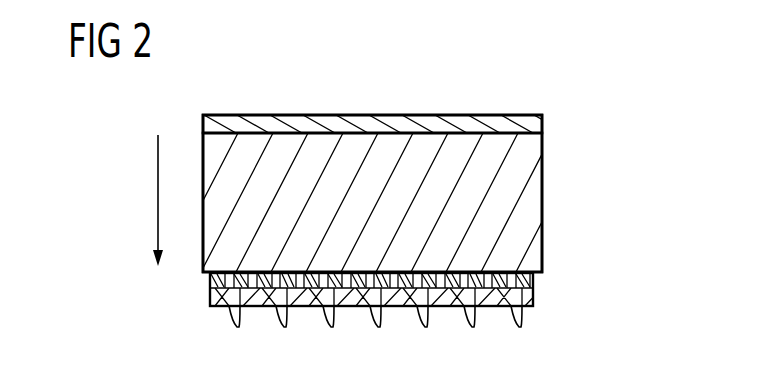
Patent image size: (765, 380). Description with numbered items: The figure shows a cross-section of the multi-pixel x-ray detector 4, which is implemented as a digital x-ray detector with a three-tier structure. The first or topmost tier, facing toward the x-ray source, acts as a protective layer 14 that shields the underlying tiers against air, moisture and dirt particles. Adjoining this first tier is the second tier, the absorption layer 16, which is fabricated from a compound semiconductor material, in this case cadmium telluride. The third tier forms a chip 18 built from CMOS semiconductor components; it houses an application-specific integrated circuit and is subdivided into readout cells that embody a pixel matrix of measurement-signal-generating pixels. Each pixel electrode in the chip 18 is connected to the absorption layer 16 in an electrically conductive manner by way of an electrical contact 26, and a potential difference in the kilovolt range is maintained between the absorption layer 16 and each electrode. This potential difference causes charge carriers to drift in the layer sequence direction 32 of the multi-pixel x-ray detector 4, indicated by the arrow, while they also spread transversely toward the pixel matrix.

The multi-pixel x-ray detector 4 is at (556, 80).
The protective layer 14 is at (537, 121).
The absorption layer 16 is at (534, 205).
The chip 18 is at (549, 298).
The electrical contact 26 is at (375, 333).
The layer sequence direction 32 is at (158, 192).